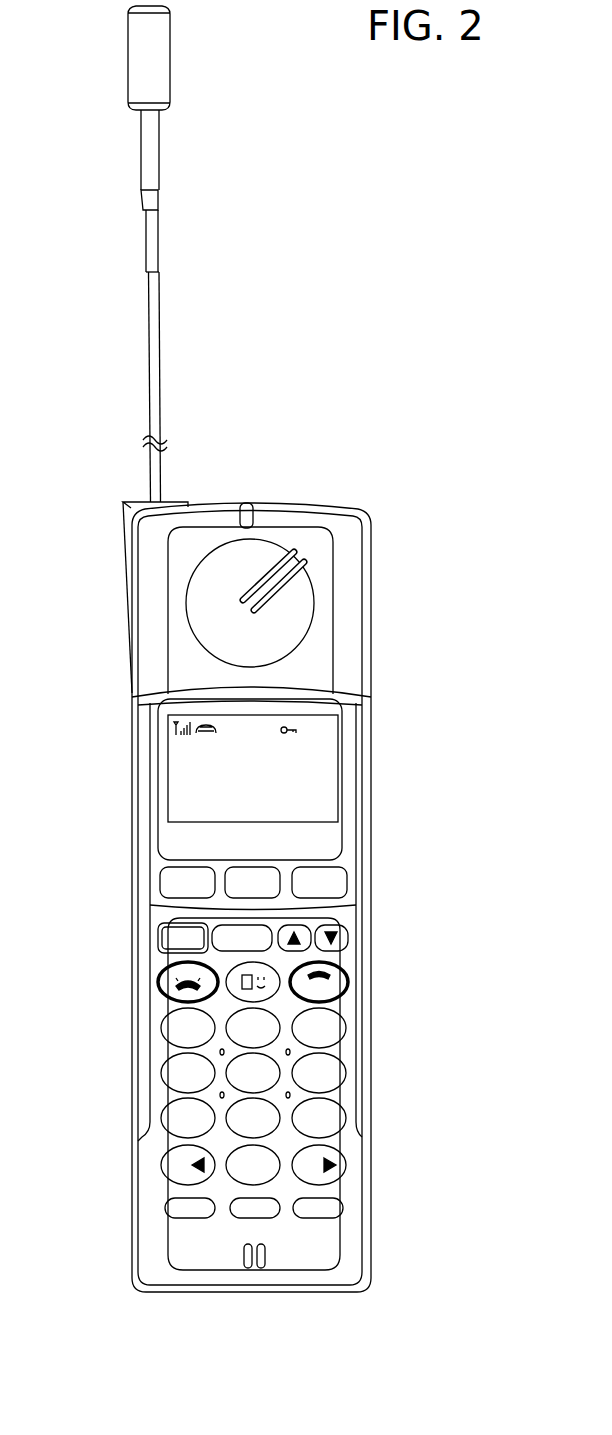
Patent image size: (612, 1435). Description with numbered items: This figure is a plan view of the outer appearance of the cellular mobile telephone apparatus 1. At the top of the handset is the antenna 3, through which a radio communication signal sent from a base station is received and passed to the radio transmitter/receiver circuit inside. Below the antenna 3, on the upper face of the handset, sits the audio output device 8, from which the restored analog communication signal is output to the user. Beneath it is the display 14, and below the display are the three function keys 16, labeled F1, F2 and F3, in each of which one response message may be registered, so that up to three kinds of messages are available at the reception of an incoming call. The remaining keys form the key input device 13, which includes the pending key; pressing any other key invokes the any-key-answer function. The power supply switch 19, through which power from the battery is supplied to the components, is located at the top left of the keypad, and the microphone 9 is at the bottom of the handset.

The cellular mobile telephone apparatus 1 is at (314, 507).
The antenna 3 is at (171, 57).
The audio output device 8 is at (243, 578).
The microphone 9 is at (266, 1262).
The key input device 13 is at (392, 870).
The display unit 14 is at (313, 770).
The function keys 16 is at (230, 866).
The power supply switch 19 is at (160, 940).